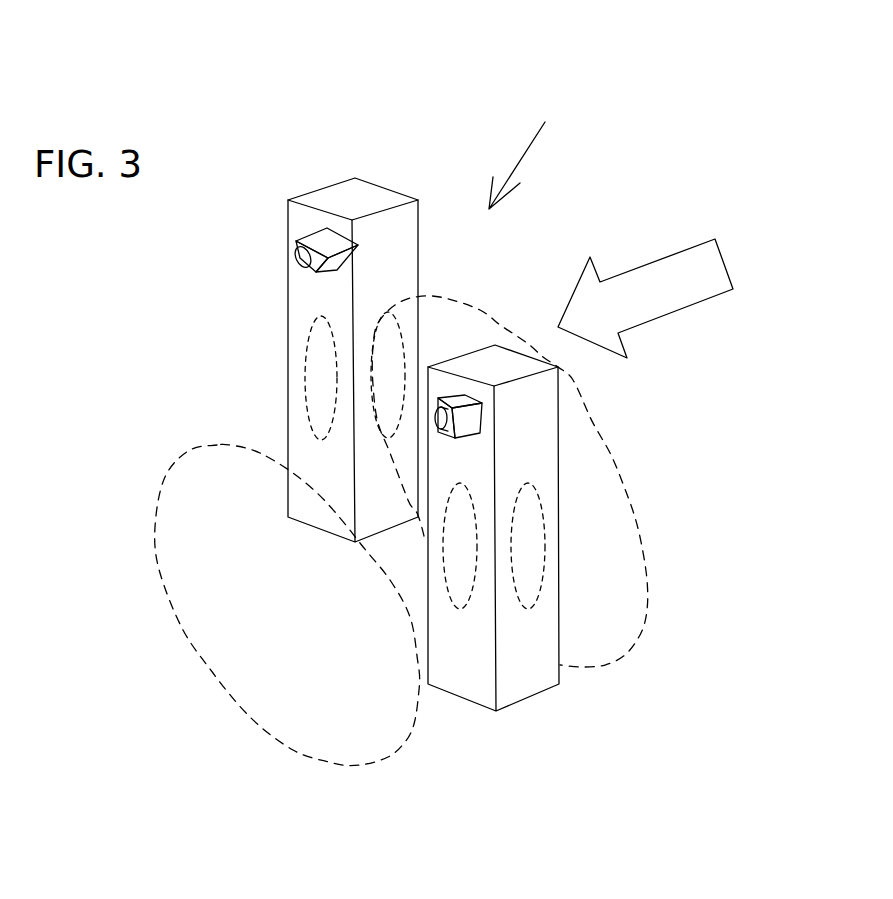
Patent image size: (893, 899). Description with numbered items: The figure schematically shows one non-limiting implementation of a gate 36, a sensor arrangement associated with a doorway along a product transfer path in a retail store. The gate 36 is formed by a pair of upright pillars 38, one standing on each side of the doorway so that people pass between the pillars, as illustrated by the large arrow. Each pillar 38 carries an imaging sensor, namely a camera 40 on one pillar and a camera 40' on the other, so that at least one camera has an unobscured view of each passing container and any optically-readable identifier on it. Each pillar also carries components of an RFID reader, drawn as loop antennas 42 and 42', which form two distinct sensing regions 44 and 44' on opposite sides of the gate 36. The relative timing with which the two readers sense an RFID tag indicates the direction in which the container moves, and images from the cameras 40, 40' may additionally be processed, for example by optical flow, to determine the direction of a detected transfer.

The gate 36 is at (554, 145).
The upright pillar 38 is at (290, 333).
The imaging sensor (camera) 40 is at (264, 239).
The imaging sensor (camera) 40' is at (579, 418).
The RFID reader components (loop antennas) 42 is at (314, 550).
The RFID reader components (loop antennas) 42' is at (560, 422).
The sensing region 44 is at (262, 616).
The sensing region 44' is at (576, 481).